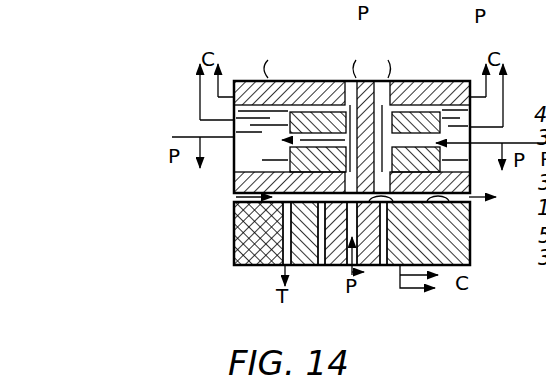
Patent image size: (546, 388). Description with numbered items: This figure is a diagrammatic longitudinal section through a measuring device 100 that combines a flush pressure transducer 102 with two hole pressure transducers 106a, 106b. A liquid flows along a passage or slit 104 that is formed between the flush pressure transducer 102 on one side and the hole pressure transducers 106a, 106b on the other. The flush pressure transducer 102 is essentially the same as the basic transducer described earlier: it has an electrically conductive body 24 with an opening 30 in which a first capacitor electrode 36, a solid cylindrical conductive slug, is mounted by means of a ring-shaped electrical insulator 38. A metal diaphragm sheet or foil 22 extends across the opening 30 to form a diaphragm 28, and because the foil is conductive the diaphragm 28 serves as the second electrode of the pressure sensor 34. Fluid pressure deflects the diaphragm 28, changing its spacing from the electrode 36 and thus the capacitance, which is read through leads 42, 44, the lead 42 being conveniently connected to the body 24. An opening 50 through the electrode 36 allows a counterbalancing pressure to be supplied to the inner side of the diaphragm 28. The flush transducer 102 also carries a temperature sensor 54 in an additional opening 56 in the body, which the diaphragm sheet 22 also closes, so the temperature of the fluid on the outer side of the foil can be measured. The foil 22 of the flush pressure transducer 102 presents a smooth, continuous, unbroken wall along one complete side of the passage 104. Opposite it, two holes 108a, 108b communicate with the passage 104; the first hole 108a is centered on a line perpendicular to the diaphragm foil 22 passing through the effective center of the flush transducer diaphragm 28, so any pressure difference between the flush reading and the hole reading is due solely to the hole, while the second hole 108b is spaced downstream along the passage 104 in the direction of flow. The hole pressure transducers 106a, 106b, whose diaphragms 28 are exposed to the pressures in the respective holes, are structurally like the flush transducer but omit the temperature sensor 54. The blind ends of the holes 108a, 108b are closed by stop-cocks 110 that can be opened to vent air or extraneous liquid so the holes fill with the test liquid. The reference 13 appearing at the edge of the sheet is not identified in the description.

The measuring device 100 is at (150, 57).
The cut-off reference 13 is at (535, 15).
The diaphragm sheet or foil 22 is at (389, 70).
The body 24 is at (448, 250).
The diaphragm 28 is at (343, 60).
The opening 30 is at (287, 82).
The pressure sensor 34 is at (264, 155).
The first capacitor electrode 36 is at (288, 141).
The ring-shaped electrical insulator 38 is at (236, 111).
The lead 42 is at (222, 82).
The lead 44 is at (200, 90).
The opening 50 is at (304, 82).
The temperature sensor 54 is at (233, 252).
The temperature sensor opening 56 is at (284, 265).
The flush pressure transducer 102 is at (230, 233).
The passage or slit 104 is at (234, 213).
The hole pressure transducer 106a is at (310, 78).
The hole pressure transducer 106b is at (442, 78).
The first hole 108a is at (350, 82).
The second hole 108b is at (399, 82).
The stop-cock 110 is at (355, 82).